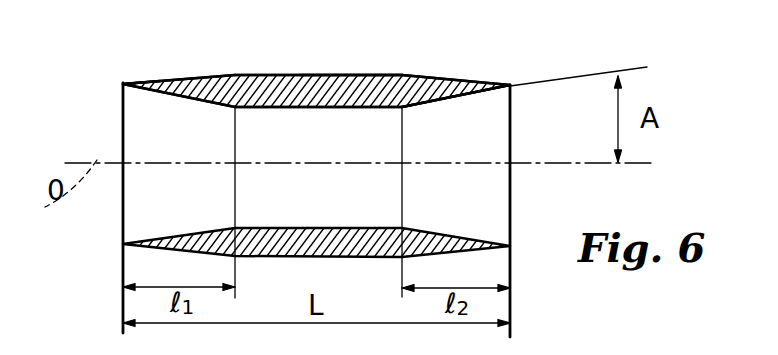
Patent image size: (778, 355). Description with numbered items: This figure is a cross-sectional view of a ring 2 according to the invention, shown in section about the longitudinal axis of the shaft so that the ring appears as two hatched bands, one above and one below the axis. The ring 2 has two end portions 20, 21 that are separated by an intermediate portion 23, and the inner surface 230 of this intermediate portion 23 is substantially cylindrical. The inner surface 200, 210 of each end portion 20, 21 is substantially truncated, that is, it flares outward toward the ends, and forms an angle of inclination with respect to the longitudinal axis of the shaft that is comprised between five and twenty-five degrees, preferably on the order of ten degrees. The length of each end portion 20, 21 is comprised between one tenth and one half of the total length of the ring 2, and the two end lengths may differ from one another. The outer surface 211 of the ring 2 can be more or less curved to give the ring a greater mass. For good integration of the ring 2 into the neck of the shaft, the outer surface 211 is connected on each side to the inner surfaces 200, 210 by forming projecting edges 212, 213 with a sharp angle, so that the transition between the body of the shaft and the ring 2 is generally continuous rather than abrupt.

The ring 2 is at (441, 62).
The end portion 20 is at (153, 80).
The end portion 21 is at (478, 83).
The intermediate portion 23 is at (240, 78).
The inner surface 200 is at (163, 100).
The inner surface 210 is at (457, 105).
The outer surface 211 is at (375, 75).
The projecting edge 212 is at (123, 85).
The projecting edge 213 is at (517, 84).
The inner surface 230 is at (290, 96).